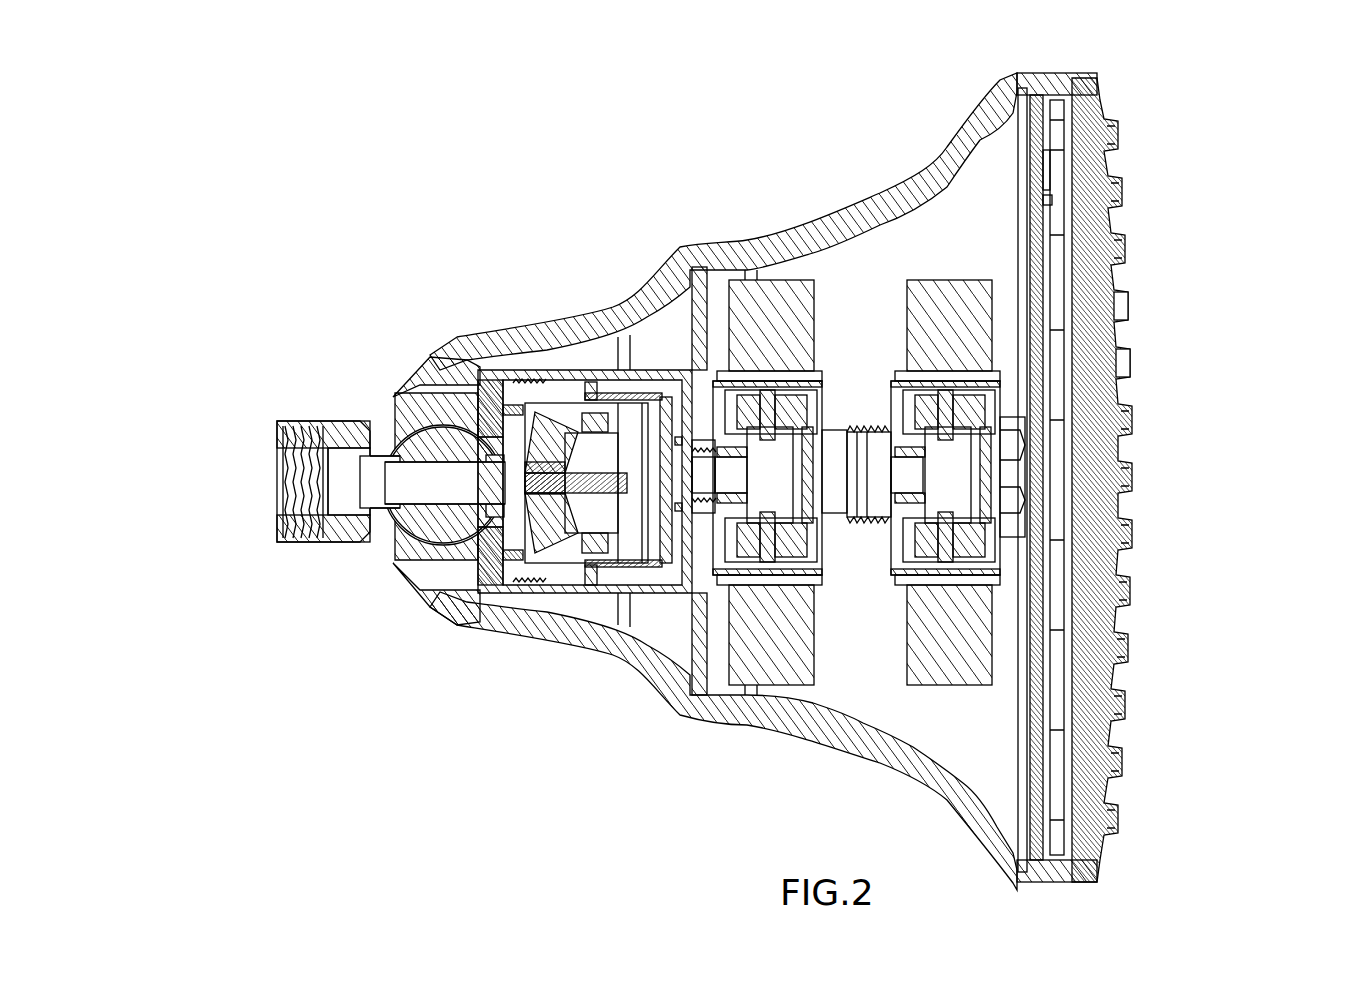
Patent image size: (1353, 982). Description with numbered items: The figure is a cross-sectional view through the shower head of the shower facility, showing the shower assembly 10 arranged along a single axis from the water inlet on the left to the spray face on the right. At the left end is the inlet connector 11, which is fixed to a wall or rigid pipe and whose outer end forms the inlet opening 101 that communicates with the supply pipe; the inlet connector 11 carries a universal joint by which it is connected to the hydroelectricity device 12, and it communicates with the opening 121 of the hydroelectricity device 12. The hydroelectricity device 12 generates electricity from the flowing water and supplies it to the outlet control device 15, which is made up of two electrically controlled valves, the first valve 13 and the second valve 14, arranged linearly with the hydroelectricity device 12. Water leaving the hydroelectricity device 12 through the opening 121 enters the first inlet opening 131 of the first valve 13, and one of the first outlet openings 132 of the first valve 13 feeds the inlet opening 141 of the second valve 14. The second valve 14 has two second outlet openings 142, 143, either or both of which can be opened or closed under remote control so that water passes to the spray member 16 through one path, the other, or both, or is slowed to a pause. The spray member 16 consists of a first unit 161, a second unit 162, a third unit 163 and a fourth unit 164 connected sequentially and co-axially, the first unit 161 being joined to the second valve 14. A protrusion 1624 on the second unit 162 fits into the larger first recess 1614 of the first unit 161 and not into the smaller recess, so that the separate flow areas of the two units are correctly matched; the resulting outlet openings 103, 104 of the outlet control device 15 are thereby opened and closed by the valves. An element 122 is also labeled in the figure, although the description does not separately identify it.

The shower assembly 10 is at (442, 200).
The inlet opening 101 is at (281, 477).
The inlet connector 11 is at (336, 430).
The hydroelectricity device 12 is at (556, 455).
The outlet opening of the hydroelectricity device 121 is at (491, 438).
The valve output shaft 122 is at (691, 468).
The first valve 13 is at (786, 300).
The first inlet opening 131 is at (741, 462).
The first outlet opening 132 is at (840, 448).
The second valve 14 is at (958, 293).
The inlet opening of the second valve 141 is at (879, 466).
The second outlet opening 142 is at (1005, 445).
The second outlet opening 143 is at (1008, 502).
The outlet control device 15 is at (950, 80).
The spray member 16 is at (1197, 15).
The first unit 161 is at (1040, 105).
The first recess 1614 is at (1047, 176).
The second unit 162 is at (1057, 120).
The protrusion 1624 is at (1047, 200).
The third unit 163 is at (1090, 143).
The fourth unit 164 is at (1102, 179).
The outlet opening 103 is at (1138, 377).
The outlet opening 104 is at (1134, 290).